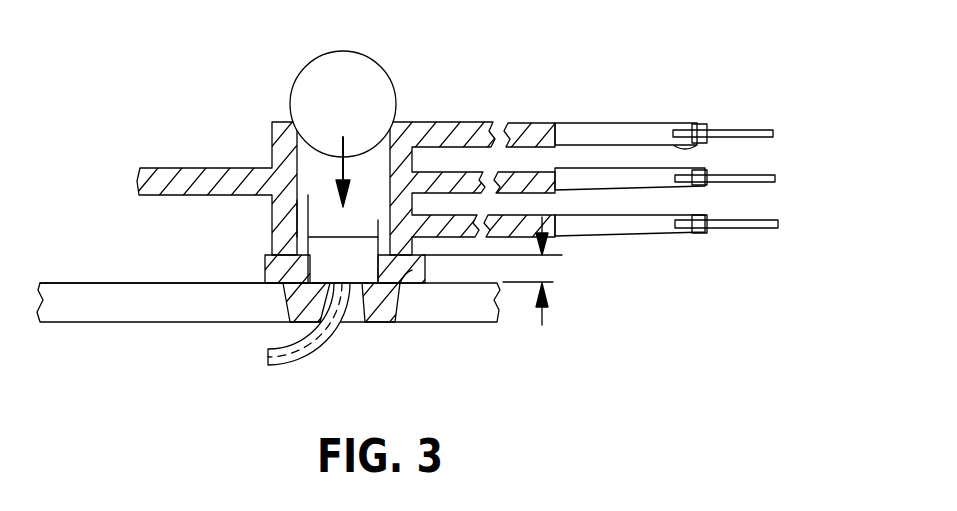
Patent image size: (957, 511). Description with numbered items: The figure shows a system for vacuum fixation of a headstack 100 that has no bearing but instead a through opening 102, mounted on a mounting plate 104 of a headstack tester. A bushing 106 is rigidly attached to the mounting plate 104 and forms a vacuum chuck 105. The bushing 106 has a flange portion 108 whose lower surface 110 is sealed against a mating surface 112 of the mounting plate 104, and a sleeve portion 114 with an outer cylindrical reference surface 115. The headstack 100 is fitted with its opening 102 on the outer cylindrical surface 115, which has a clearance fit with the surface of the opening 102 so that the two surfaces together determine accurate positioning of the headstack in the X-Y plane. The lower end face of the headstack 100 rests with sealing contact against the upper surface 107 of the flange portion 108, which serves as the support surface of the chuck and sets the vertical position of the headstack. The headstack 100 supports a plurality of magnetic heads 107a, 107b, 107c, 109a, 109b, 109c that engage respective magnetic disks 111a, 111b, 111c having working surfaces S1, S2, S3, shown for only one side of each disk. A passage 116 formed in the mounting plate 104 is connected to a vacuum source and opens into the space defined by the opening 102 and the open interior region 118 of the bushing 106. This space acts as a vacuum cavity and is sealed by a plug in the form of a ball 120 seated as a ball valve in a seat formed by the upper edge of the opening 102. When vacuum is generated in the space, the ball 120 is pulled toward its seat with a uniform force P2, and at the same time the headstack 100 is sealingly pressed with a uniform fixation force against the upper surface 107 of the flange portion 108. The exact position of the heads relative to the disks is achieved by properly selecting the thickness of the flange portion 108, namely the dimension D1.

The headstack 100 is at (546, 42).
The through opening 102 is at (297, 195).
The mounting plate 104 is at (104, 336).
The vacuum chuck 105 is at (270, 308).
The bushing 106 is at (362, 318).
The upper surface of flange portion 107 is at (270, 252).
The magnetic head 107a is at (697, 125).
The magnetic head 107b is at (703, 167).
The magnetic head 107c is at (700, 213).
The flange portion 108 is at (437, 270).
The magnetic head 109a is at (690, 148).
The magnetic head 109b is at (700, 188).
The magnetic head 109c is at (702, 235).
The lower surface of flange portion 110 is at (410, 283).
The magnetic disk 111a is at (760, 128).
The magnetic disk 111b is at (773, 178).
The magnetic disk 111c is at (775, 222).
The mating surface 112 is at (97, 283).
The sleeve portion 114 is at (330, 255).
The outer cylindrical reference surface 115 is at (390, 232).
The passage 116 is at (311, 358).
The open interior region 118 is at (293, 207).
The ball 120 is at (348, 62).
The uniform force P2 is at (345, 159).
The dimension D1 is at (495, 288).
The working surface S1 is at (735, 130).
The working surface S2 is at (750, 176).
The working surface S3 is at (743, 217).